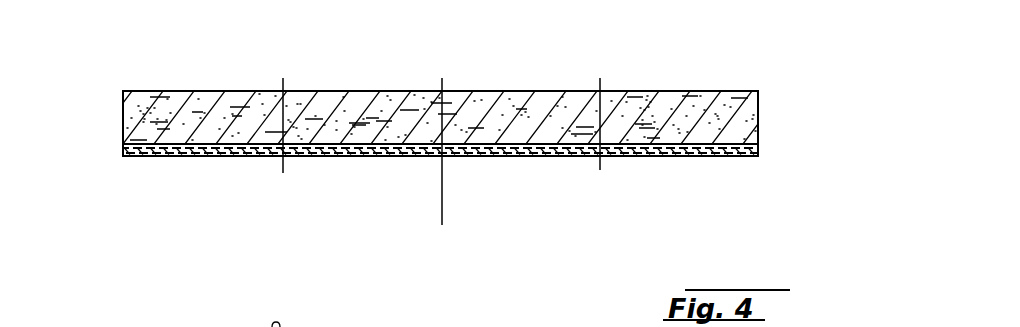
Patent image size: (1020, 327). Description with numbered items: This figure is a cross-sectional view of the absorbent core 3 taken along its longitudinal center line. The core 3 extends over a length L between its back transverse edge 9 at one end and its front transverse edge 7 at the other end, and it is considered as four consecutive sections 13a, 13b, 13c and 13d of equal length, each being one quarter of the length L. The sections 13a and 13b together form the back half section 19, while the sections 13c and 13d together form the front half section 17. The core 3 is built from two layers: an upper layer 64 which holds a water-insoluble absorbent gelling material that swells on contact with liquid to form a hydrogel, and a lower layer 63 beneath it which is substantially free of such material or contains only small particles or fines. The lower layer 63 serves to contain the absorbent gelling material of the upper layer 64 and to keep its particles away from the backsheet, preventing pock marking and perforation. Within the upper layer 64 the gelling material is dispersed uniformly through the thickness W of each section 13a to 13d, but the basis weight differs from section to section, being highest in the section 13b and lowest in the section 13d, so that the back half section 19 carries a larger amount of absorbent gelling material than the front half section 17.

The absorbent core 3 is at (568, 60).
The front transverse edge 7 is at (762, 116).
The back transverse edge 9 is at (121, 103).
The first section 13a is at (198, 97).
The second section 13b is at (357, 97).
The third section 13c is at (505, 97).
The fourth section 13d is at (657, 97).
The lower layer 63 is at (665, 158).
The upper layer 64 is at (735, 96).
The thickness W is at (77, 50).
The length L is at (125, 260).
The back half section 19 is at (124, 160).
The front half section 17 is at (758, 160).